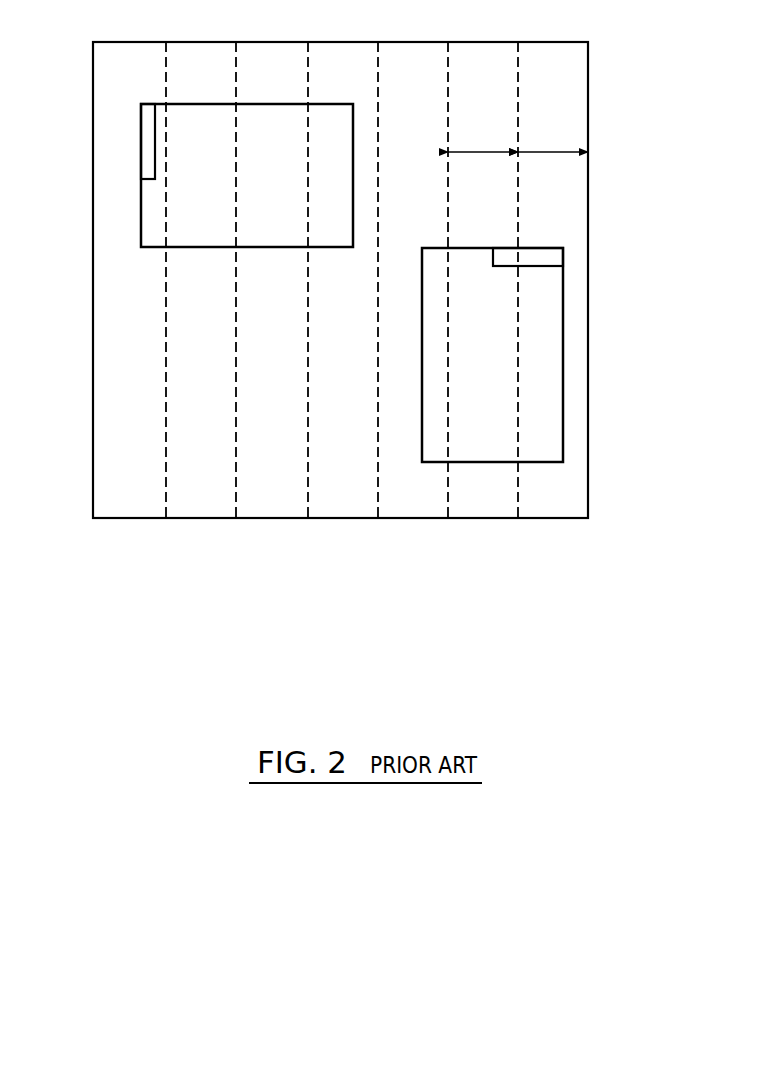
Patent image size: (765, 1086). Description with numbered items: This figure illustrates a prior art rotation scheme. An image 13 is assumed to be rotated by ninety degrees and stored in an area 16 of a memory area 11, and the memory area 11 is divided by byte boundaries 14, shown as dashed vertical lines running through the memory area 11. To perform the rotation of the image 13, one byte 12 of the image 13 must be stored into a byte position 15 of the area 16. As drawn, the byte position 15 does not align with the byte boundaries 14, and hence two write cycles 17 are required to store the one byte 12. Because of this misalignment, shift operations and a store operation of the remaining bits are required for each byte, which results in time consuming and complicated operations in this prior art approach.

The memory area 11 is at (342, 602).
The byte 12 is at (145, 132).
The image 13 is at (258, 103).
The byte boundaries 14 is at (518, 486).
The byte position 15 is at (545, 248).
The area 16 is at (563, 362).
The write cycles 17 is at (481, 152).